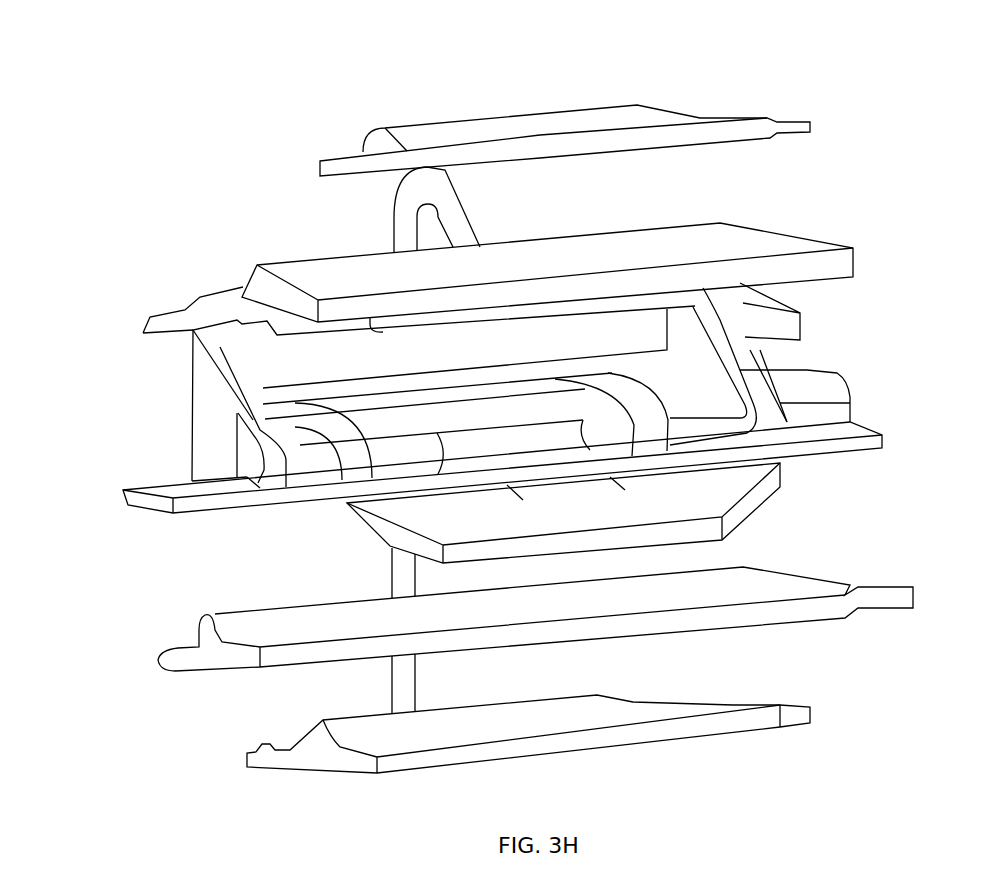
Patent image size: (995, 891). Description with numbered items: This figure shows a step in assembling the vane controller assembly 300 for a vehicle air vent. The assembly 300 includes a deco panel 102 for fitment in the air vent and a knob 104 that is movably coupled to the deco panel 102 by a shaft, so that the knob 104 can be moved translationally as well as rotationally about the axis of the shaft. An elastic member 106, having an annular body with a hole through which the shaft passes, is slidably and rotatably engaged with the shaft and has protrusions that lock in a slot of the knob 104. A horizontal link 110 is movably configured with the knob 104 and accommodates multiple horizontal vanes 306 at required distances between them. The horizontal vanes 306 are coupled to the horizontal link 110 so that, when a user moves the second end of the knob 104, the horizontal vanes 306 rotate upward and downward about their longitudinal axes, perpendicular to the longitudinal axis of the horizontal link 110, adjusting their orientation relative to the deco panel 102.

The vane controller assembly 300 is at (163, 75).
The deco panel 102 is at (352, 360).
The knob 104 is at (488, 538).
The elastic member 106 is at (490, 442).
The horizontal link 110 is at (410, 213).
The horizontal vanes 306 is at (673, 133).